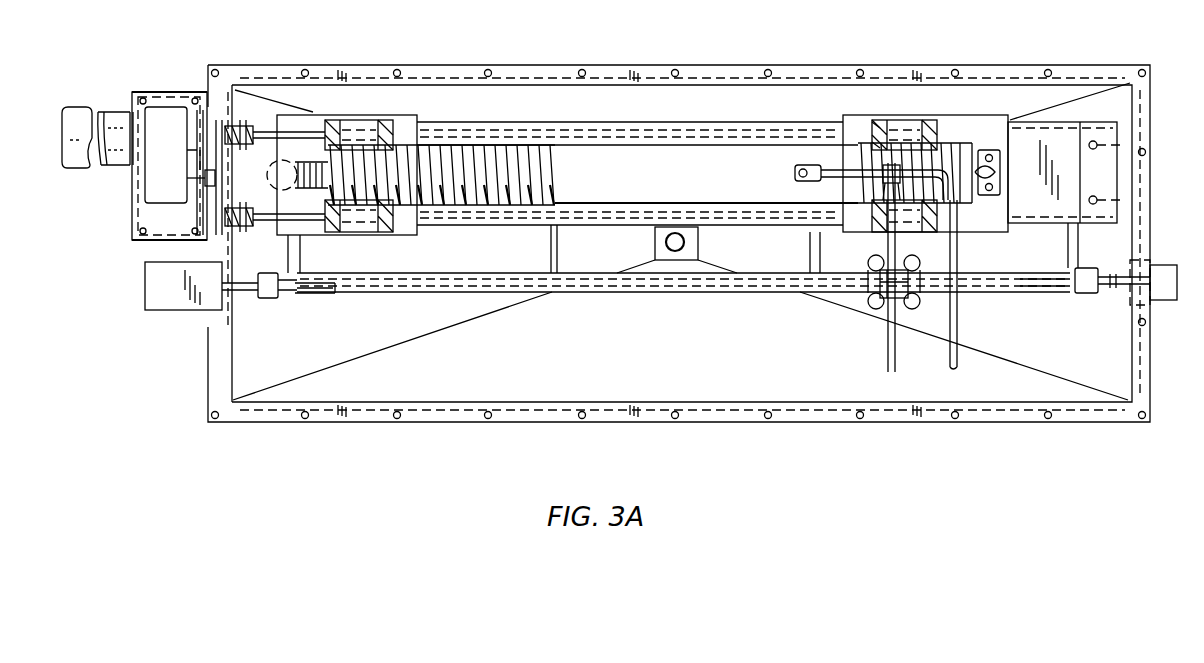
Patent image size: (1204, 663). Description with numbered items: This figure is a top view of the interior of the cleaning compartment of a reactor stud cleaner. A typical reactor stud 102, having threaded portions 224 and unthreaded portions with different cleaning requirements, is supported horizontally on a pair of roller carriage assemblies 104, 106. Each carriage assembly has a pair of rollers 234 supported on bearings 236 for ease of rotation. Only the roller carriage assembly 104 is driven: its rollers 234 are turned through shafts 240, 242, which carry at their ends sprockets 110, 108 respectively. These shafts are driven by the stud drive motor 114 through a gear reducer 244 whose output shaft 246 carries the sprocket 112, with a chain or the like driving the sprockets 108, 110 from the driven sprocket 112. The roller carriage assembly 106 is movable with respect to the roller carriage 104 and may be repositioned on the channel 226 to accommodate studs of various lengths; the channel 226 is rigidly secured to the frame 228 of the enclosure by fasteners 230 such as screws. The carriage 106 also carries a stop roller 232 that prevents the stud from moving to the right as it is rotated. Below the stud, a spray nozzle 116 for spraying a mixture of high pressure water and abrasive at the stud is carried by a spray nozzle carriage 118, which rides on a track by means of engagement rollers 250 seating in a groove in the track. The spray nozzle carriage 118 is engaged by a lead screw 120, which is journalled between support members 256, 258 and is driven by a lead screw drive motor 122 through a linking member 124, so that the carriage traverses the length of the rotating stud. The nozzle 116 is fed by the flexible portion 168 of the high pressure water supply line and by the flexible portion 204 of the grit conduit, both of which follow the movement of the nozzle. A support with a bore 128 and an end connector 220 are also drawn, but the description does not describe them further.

The reactor stud 102 is at (712, 140).
The roller carriage assembly 104 is at (360, 115).
The roller carriage assembly 106 is at (975, 115).
The sprocket 108 is at (215, 237).
The sprocket 110 is at (215, 130).
The sprocket 112 is at (212, 160).
The stud drive motor 114 is at (85, 107).
The spray nozzle 116 is at (795, 173).
The spray nozzle carriage 118 is at (940, 312).
The lead screw 120 is at (315, 292).
The lead screw drive motor 122 is at (145, 288).
The linking member 124 is at (243, 292).
The support with bore 128 is at (675, 252).
The flexible portion 168 is at (896, 365).
The flexible portion 204 is at (960, 330).
The end connector 220 is at (1160, 268).
The threaded portions 224 is at (515, 145).
The channel 226 is at (1088, 122).
The frame 228 is at (1142, 95).
The fasteners 230 is at (1097, 143).
The stop roller 232 is at (995, 150).
The rollers 234 is at (350, 120).
The bearings 236 is at (872, 124).
The shaft 240 is at (262, 130).
The shaft 242 is at (270, 222).
The gear reducer 244 is at (158, 108).
The output shaft 246 is at (205, 180).
The engagement rollers 250 is at (876, 310).
The support member 256 is at (270, 298).
The support member 258 is at (1090, 293).